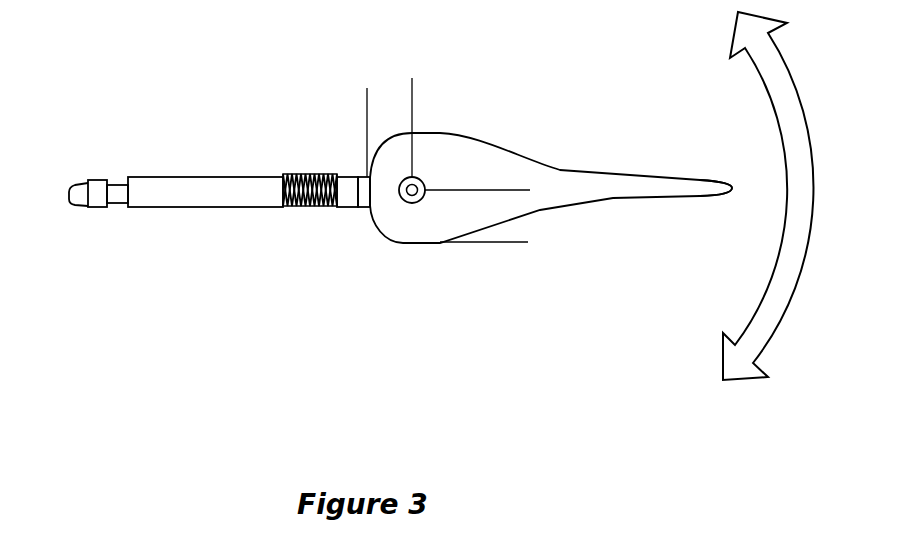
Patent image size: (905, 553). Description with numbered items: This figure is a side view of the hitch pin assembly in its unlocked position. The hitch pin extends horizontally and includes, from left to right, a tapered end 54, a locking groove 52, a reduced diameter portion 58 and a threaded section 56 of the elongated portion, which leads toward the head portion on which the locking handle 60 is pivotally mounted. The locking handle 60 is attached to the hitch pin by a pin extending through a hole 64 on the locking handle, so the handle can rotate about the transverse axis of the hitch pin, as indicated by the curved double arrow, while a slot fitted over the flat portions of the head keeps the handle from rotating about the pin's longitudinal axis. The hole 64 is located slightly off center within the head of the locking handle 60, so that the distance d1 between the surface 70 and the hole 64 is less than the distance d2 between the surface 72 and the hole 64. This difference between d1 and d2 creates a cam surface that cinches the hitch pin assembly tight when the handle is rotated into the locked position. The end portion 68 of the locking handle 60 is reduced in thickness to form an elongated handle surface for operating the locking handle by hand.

The locking groove 52 is at (120, 179).
The tapered end 54 is at (80, 207).
The threaded section 56 is at (305, 160).
The reduced diameter portion 58 is at (208, 184).
The locking handle 60 is at (533, 150).
The hole 64 is at (422, 198).
The end portion 68 is at (667, 198).
The surface 70 is at (362, 174).
The surface 72 is at (420, 247).
The distance d1 is at (389, 127).
The distance d2 is at (483, 216).